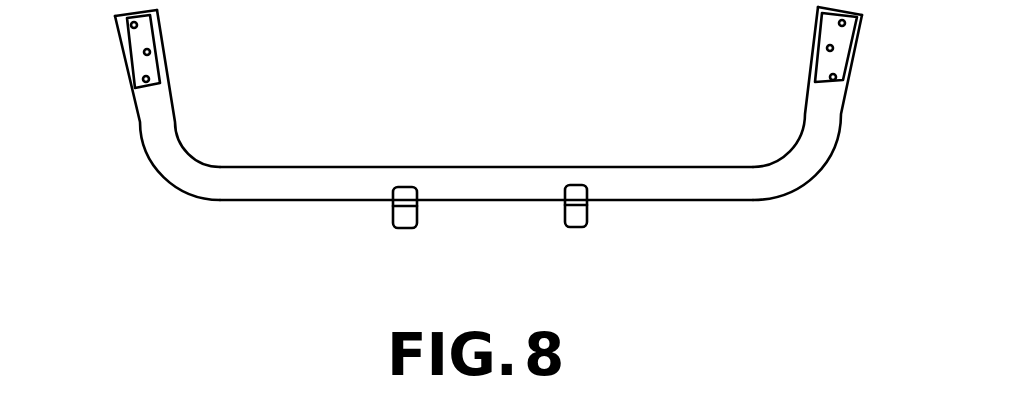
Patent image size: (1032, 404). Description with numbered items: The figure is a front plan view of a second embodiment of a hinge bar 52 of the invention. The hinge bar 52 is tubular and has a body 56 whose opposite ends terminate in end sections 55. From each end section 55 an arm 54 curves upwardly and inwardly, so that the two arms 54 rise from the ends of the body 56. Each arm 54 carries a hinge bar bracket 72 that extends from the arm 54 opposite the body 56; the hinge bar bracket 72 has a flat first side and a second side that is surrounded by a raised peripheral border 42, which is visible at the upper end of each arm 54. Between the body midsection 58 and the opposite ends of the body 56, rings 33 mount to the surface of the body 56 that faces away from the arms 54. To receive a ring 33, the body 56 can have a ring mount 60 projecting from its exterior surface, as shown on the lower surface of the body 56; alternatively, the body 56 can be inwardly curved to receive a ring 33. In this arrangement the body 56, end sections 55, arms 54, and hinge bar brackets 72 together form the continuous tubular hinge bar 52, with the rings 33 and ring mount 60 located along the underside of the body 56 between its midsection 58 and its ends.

The ring 33 is at (577, 220).
The raised peripheral border 42 is at (161, 44).
The hinge bar 52 is at (338, 177).
The arm 54 is at (150, 103).
The end section 55 is at (770, 177).
The body 56 is at (652, 185).
The body midsection 58 is at (486, 175).
The ring mount 60 is at (519, 232).
The hinge bar bracket 72 is at (833, 58).